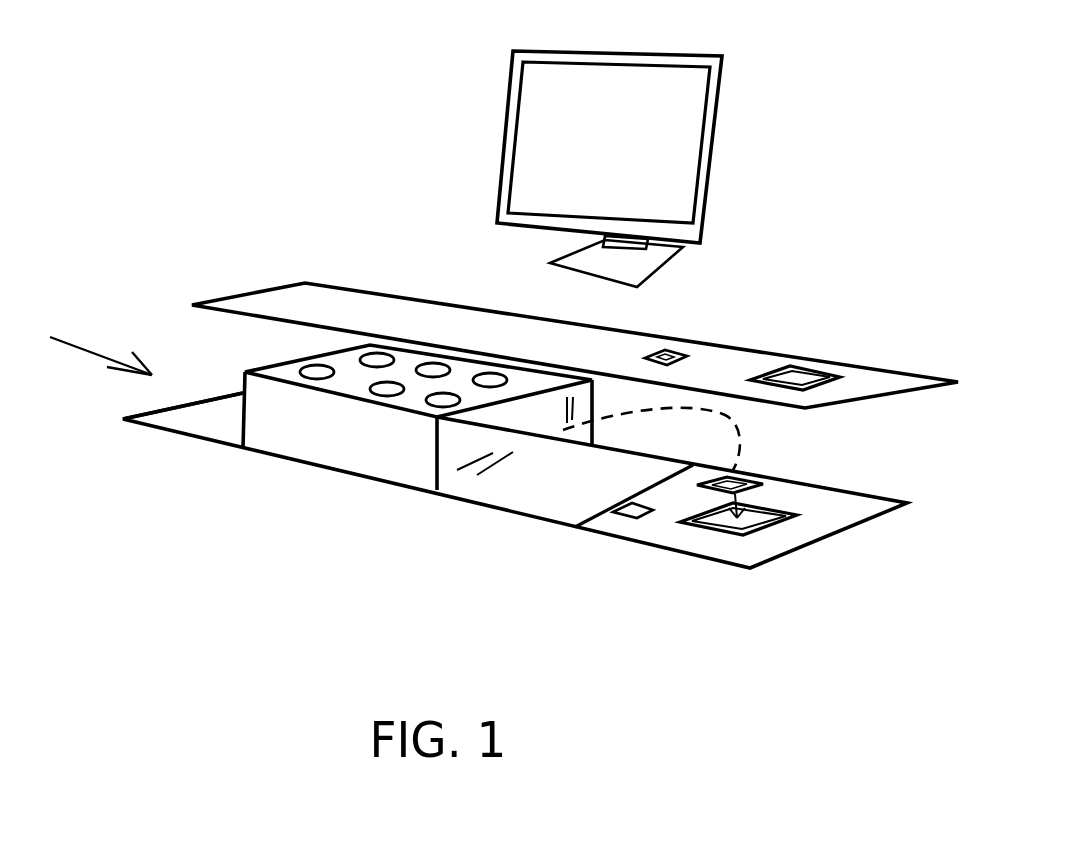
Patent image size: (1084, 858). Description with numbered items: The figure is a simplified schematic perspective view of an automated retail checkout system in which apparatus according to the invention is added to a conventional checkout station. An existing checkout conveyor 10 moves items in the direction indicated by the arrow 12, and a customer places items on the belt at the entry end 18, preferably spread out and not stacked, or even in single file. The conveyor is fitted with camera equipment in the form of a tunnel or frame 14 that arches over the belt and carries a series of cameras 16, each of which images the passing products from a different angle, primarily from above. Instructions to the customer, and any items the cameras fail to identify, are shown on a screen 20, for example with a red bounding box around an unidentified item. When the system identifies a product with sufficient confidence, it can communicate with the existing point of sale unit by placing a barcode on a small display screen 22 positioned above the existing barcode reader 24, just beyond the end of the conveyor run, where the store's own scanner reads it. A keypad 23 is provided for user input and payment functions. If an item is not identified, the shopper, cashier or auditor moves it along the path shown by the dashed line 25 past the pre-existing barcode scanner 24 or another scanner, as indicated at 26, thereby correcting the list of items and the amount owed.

The checkout conveyor 10 is at (547, 495).
The arrow 12 is at (82, 353).
The frame 14 is at (242, 412).
The cameras 16 is at (317, 372).
The entry end 18 is at (187, 398).
The screen 20 is at (678, 170).
The display screen 22 is at (813, 372).
The keypad 23 is at (638, 377).
The barcode reader 24 is at (770, 530).
The dashed line 25 is at (740, 427).
The scanner position 26 is at (745, 473).